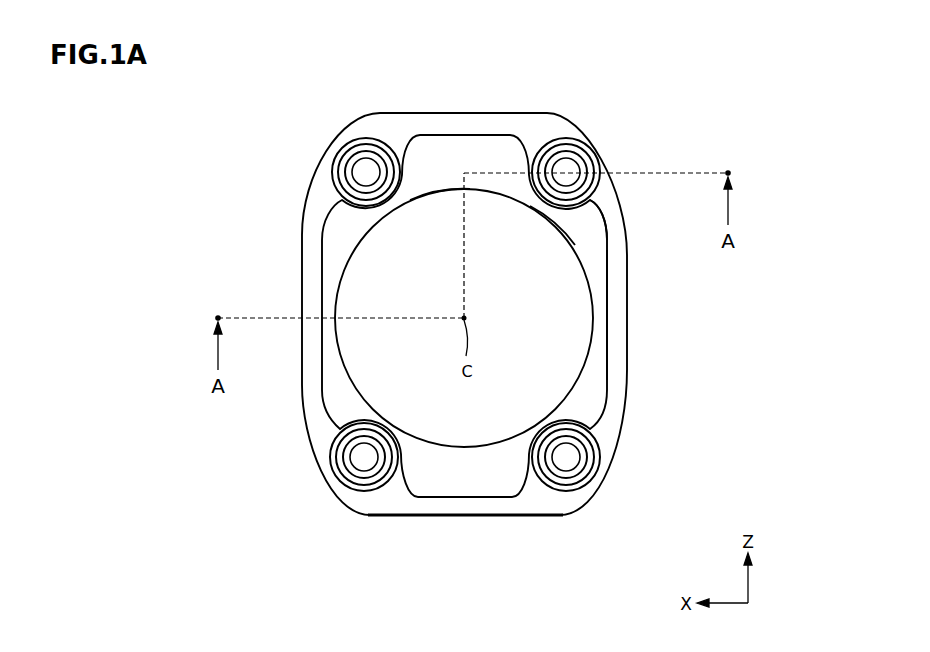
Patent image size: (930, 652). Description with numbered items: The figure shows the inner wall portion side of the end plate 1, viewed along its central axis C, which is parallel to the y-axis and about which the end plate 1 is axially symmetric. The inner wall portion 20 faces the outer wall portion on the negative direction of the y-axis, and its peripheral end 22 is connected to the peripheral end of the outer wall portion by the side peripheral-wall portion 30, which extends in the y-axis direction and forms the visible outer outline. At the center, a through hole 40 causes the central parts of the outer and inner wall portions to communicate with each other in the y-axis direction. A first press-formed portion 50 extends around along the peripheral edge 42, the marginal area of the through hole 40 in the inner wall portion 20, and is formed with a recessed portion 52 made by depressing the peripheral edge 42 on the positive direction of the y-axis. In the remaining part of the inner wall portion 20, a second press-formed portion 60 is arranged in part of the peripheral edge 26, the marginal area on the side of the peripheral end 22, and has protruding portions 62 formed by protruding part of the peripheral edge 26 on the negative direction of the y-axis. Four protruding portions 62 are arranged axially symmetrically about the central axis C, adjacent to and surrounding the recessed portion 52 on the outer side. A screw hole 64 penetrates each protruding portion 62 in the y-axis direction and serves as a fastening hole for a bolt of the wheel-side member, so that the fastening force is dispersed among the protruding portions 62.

The end plate 1 is at (612, 98).
The inner wall portion 20 is at (512, 115).
The peripheral end of the inner wall portion 22 is at (629, 287).
The peripheral edge 26 is at (616, 350).
The side peripheral-wall portion 30 is at (300, 245).
The through hole 40 is at (348, 372).
The peripheral edge of the through hole 42 is at (436, 190).
The first press-formed portion 50 is at (552, 224).
The recessed portion 52 is at (577, 238).
The second press-formed portion 60 is at (612, 413).
The protruding portion 62 is at (359, 139).
The screw hole 64 is at (352, 174).